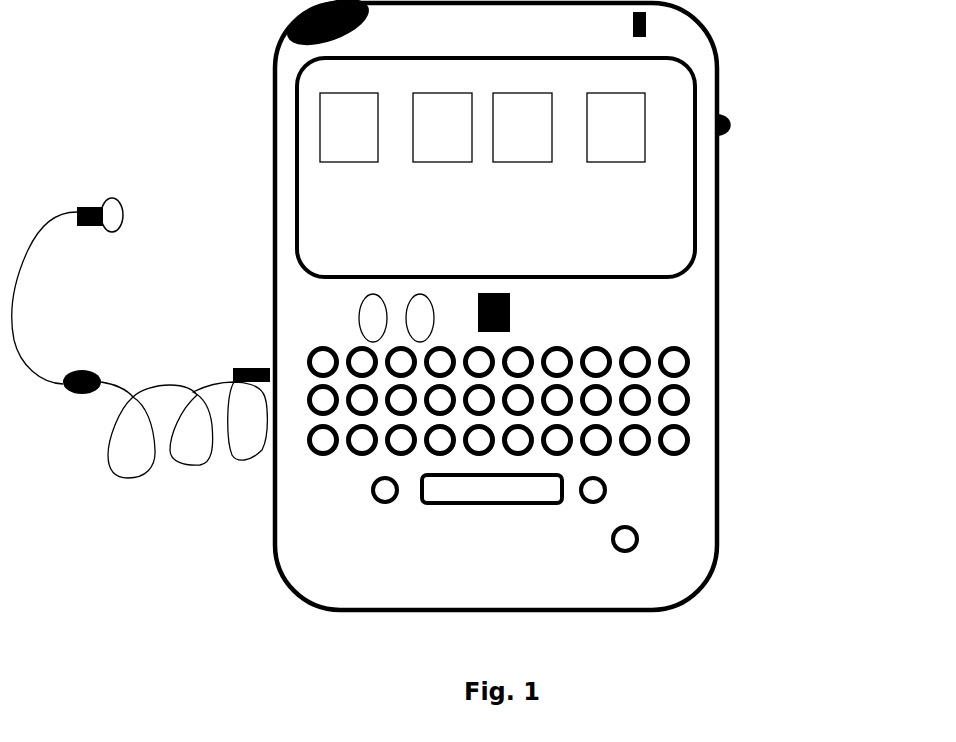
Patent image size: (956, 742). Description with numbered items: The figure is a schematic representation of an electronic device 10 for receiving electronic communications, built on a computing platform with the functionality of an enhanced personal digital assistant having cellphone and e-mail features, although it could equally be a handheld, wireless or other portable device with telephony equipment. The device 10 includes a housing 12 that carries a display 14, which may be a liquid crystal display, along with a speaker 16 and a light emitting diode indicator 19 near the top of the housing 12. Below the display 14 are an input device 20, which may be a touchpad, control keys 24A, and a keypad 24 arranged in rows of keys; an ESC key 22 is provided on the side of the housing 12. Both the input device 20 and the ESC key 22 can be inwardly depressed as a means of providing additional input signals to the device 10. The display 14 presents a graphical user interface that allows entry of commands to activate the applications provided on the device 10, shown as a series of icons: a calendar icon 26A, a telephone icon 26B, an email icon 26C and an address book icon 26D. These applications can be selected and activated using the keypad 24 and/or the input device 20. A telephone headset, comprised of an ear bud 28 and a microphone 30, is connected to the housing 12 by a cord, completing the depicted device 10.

The electronic device 10 is at (387, 622).
The housing 12 is at (542, 530).
The display 14 is at (544, 167).
The speaker 16 is at (297, 13).
The LED indicator 19 is at (657, 33).
The input device 20 is at (533, 318).
The ESC key 22 is at (748, 124).
The keypad 24 is at (673, 360).
The control keys 24A is at (418, 323).
The calendar icon 26A is at (345, 156).
The telephone icon 26B is at (439, 156).
The email icon 26C is at (522, 156).
The address book icon 26D is at (616, 156).
The ear bud 28 is at (128, 202).
The microphone 30 is at (87, 370).